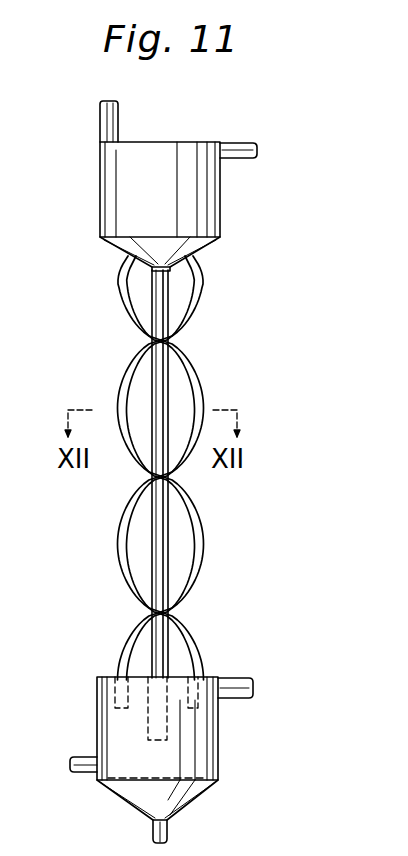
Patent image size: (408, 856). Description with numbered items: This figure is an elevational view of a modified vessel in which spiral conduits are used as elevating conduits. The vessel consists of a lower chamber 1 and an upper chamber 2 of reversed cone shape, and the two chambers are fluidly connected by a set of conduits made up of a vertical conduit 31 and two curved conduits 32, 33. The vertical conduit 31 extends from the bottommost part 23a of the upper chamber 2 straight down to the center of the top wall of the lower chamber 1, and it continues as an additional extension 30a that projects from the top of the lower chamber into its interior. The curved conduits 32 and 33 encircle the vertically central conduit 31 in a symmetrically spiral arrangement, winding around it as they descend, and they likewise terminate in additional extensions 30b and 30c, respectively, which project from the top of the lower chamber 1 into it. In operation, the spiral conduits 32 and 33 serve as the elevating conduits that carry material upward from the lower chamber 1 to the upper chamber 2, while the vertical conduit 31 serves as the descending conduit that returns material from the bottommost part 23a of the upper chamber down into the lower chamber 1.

The lower chamber 1 is at (222, 763).
The upper chamber 2 is at (226, 212).
The bottommost part 23a is at (176, 268).
The vertical conduit 31 is at (157, 572).
The curved conduit 32 is at (197, 537).
The curved conduit 33 is at (119, 544).
The additional extension 30a is at (148, 725).
The additional extension 30b is at (115, 697).
The additional extension 30c is at (200, 702).